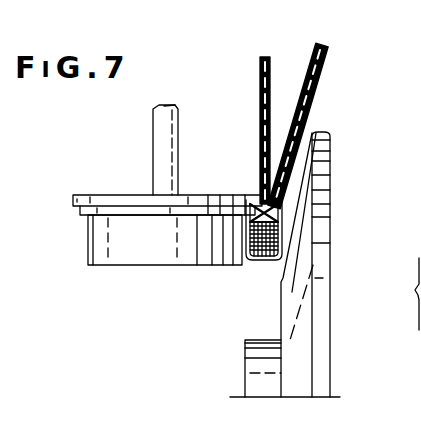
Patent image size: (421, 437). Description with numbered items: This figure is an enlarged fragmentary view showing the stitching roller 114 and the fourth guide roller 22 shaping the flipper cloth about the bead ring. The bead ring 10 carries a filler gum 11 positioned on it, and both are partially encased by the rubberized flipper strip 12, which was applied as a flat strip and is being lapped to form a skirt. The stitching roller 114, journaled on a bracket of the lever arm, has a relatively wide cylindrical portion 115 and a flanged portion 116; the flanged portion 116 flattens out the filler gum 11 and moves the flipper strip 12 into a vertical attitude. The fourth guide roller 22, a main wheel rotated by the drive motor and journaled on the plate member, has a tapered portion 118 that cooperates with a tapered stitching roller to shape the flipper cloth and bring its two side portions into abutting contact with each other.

The bead ring 10 is at (260, 262).
The filler gum 11 is at (270, 196).
The flipper strip 12 is at (313, 57).
The fourth guide roller 22 is at (247, 366).
The stitching roller 114 is at (94, 154).
The cylindrical portion 115 is at (100, 247).
The flanged portion 116 is at (95, 198).
The tapered portion 118 is at (319, 134).